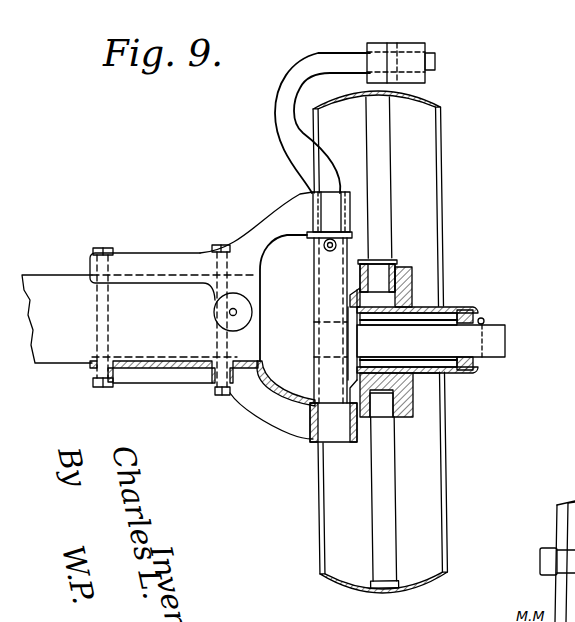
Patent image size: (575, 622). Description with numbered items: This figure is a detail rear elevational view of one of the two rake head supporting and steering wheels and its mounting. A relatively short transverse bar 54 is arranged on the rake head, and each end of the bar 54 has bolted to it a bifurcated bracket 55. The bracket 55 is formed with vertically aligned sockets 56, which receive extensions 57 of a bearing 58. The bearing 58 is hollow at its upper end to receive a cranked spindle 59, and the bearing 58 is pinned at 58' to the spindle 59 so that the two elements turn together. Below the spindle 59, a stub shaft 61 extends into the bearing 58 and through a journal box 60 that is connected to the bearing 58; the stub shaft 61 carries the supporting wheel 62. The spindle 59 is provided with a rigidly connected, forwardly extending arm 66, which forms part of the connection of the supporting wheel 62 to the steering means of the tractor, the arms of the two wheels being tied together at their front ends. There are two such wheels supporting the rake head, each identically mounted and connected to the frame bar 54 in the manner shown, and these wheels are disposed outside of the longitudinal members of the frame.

The transverse bar 54 is at (67, 353).
The bifurcated bracket 55 is at (262, 373).
The socket 56 is at (312, 190).
The extension 57 is at (333, 430).
The bearing 58 is at (276, 315).
The pin 58' is at (407, 222).
The cranked spindle 59 is at (337, 55).
The journal box 60 is at (422, 308).
The stub shaft 61 is at (492, 342).
The supporting wheel 62 is at (330, 483).
The arm 66 is at (417, 50).